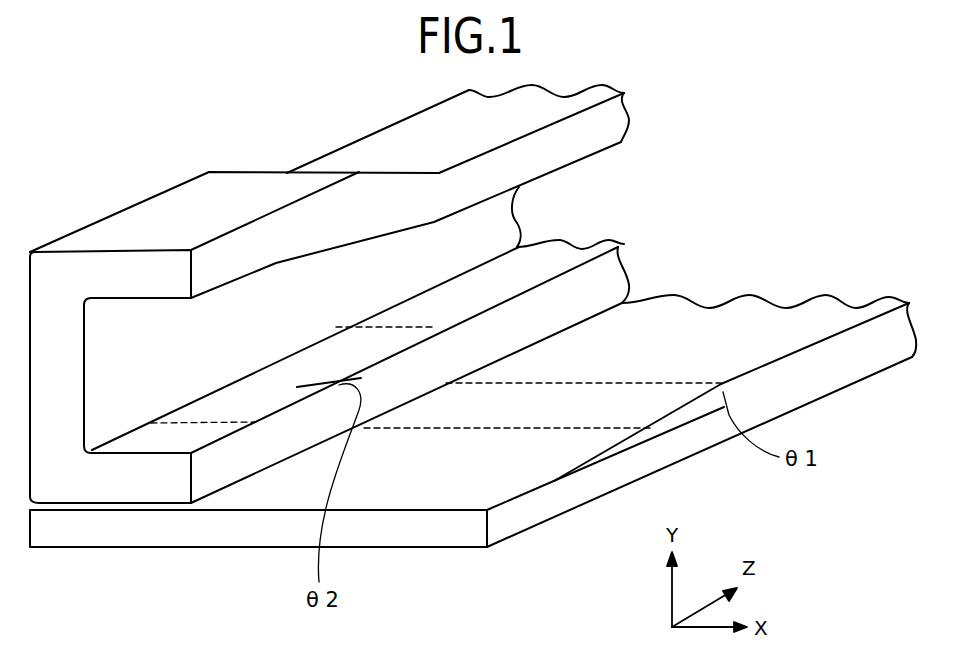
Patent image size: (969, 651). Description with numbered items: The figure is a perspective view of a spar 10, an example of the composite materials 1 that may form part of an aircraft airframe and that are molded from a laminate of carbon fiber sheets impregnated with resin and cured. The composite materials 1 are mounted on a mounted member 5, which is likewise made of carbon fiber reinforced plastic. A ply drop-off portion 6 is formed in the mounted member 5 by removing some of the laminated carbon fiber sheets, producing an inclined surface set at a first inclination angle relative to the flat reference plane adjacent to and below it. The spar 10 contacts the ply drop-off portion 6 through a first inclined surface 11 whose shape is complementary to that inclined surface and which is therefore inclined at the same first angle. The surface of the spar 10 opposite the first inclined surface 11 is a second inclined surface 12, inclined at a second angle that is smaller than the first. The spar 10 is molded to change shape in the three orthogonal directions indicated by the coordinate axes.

The composite materials 1 is at (473, 348).
The spar 10 is at (153, 197).
The first inclined surface 11 is at (387, 411).
The second inclined surface 12 is at (305, 375).
The mounted member 5 is at (555, 519).
The ply drop-off portion 6 is at (620, 407).